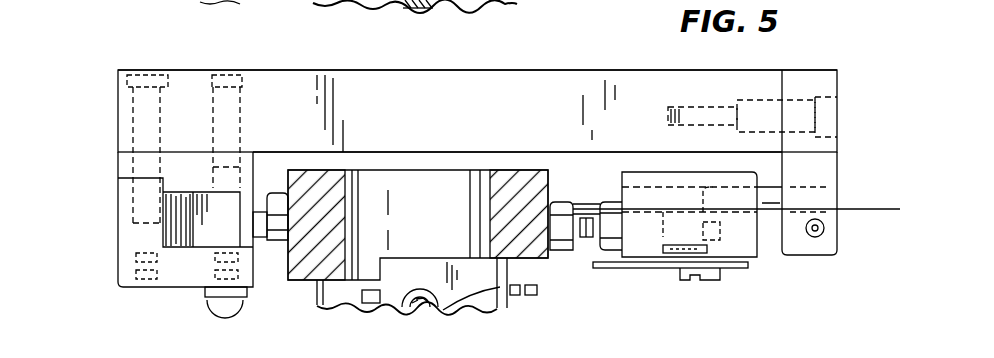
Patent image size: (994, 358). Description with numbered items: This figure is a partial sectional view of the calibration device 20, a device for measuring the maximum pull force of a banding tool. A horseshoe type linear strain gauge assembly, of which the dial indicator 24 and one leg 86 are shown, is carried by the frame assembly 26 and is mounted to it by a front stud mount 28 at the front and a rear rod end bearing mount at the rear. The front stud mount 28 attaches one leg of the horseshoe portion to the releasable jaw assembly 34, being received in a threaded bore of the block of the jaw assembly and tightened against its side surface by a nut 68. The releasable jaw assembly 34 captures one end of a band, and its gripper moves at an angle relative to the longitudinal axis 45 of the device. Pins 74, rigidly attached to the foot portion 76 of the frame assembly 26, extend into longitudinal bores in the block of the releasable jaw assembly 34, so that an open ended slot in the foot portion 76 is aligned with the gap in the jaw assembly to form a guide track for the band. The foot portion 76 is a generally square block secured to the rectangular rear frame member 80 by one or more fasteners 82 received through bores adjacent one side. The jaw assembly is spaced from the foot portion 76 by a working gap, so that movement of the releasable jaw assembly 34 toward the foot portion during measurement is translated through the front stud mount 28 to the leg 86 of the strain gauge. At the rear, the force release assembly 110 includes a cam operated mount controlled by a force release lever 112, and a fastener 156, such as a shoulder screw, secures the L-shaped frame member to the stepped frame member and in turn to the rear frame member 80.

The calibration device 20 is at (560, 53).
The dial indicator 24 is at (517, 1).
The frame assembly 26 is at (494, 68).
The front stud mount 28 is at (588, 240).
The releasable jaw assembly 34 is at (760, 250).
The longitudinal axis 45 is at (883, 209).
The nut 68 is at (612, 205).
The pins 74 is at (772, 215).
The foot portion 76 is at (818, 70).
The rear frame member 80 is at (436, 120).
The fasteners 82 is at (740, 100).
The leg 86 is at (533, 247).
The force release assembly 110 is at (112, 255).
The force release lever 112 is at (253, 3).
The fastener 156 is at (133, 203).